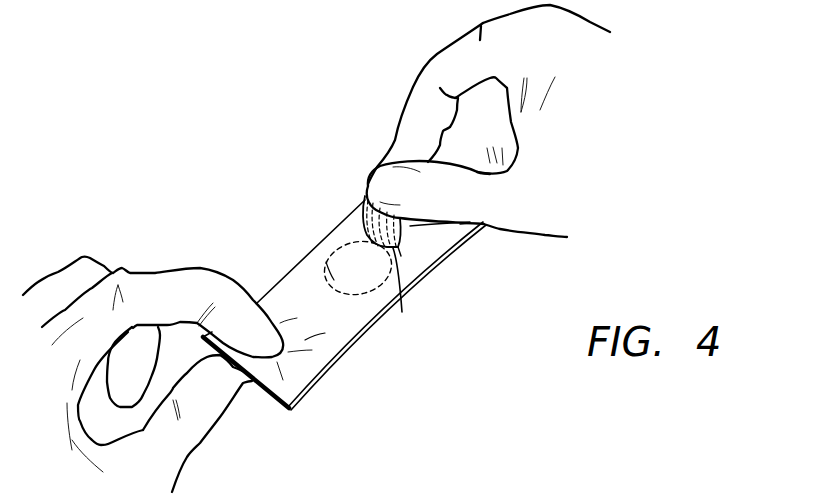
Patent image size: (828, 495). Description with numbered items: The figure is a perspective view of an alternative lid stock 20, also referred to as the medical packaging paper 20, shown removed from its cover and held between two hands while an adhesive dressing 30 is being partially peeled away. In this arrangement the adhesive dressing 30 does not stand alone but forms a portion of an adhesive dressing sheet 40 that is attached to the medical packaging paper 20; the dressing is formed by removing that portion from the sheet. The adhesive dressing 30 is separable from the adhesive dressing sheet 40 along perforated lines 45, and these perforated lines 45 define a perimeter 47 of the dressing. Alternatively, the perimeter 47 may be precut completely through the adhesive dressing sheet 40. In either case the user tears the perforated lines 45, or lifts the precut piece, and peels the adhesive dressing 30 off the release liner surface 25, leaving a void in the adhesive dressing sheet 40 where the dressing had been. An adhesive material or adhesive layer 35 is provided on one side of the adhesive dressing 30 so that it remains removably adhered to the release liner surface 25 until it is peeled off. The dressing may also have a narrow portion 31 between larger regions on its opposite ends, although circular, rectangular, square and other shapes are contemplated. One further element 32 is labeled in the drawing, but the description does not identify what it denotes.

The lid stock 20 is at (304, 236).
The release liner surface 25 is at (352, 262).
The adhesive dressing 30 is at (413, 233).
The narrow portion 31 is at (400, 248).
The liner tab 32 is at (481, 228).
The adhesive layer 35 is at (402, 312).
The adhesive dressing sheet 40 is at (320, 333).
The perforated lines 45 is at (323, 270).
The perimeter 47 is at (363, 192).